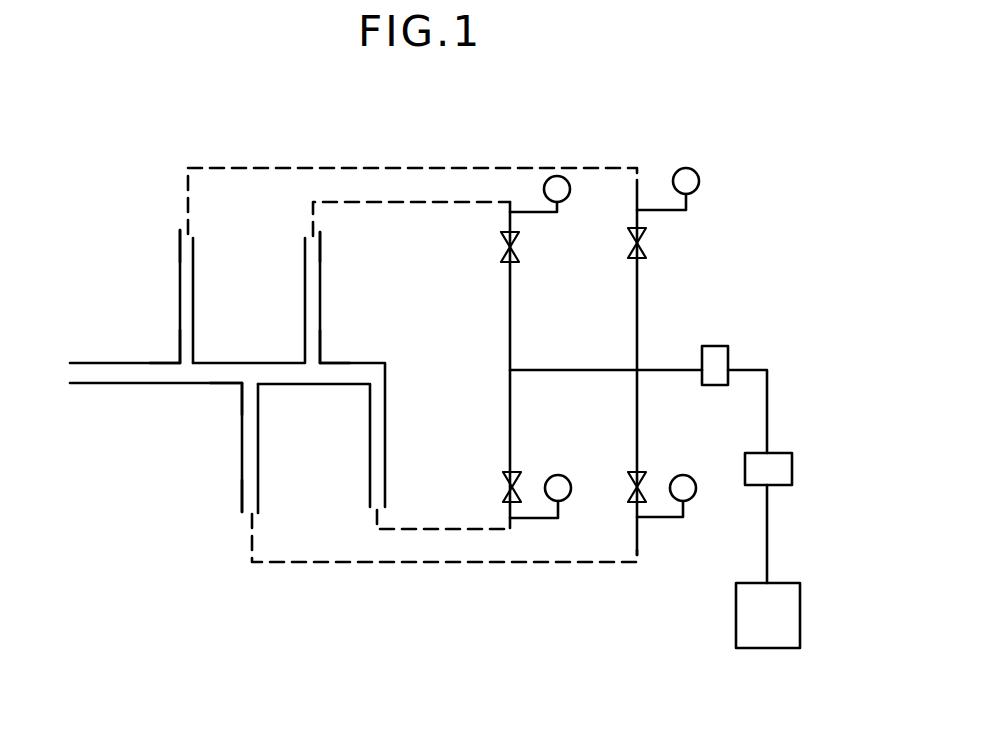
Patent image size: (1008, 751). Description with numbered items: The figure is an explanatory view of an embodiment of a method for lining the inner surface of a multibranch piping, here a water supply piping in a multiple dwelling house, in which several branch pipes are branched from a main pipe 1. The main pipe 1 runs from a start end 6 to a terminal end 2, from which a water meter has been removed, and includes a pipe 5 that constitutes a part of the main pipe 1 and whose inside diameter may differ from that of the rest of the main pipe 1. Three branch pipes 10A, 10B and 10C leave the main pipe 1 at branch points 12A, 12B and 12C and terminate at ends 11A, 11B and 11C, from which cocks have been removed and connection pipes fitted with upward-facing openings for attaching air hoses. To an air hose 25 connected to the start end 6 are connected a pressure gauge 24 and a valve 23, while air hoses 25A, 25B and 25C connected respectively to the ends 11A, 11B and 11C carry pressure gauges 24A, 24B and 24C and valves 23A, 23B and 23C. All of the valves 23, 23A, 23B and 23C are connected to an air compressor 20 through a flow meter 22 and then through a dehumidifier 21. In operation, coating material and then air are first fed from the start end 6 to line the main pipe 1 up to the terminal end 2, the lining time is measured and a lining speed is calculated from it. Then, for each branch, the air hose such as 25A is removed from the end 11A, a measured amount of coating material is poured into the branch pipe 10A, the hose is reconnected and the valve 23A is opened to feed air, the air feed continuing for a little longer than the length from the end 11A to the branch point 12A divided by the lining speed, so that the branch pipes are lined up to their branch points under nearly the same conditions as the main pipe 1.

The main pipe 1 is at (178, 388).
The terminal end 2 is at (72, 375).
The pipe 5 is at (386, 410).
The start end 6 is at (372, 515).
The branch pipe 10A is at (320, 286).
The branch pipe 10B is at (242, 456).
The branch pipe 10C is at (180, 290).
The end of branch pipe 11A is at (318, 230).
The end of branch pipe 11B is at (242, 512).
The end of branch pipe 11C is at (180, 234).
The branch point 12A is at (320, 361).
The branch point 12B is at (242, 386).
The branch point 12C is at (180, 360).
The air compressor 20 is at (800, 585).
The dehumidifier 21 is at (792, 462).
The flow meter 22 is at (728, 346).
The valve 23 is at (515, 472).
The valve 23A is at (518, 252).
The valve 23B is at (645, 474).
The valve 23C is at (648, 238).
The pressure gauge 24 is at (561, 476).
The pressure gauge 24A is at (568, 203).
The pressure gauge 24B is at (687, 501).
The pressure gauge 24C is at (687, 168).
The air hose 25 is at (410, 528).
The air hose 25A is at (447, 203).
The air hose 25B is at (312, 564).
The air hose 25C is at (268, 167).